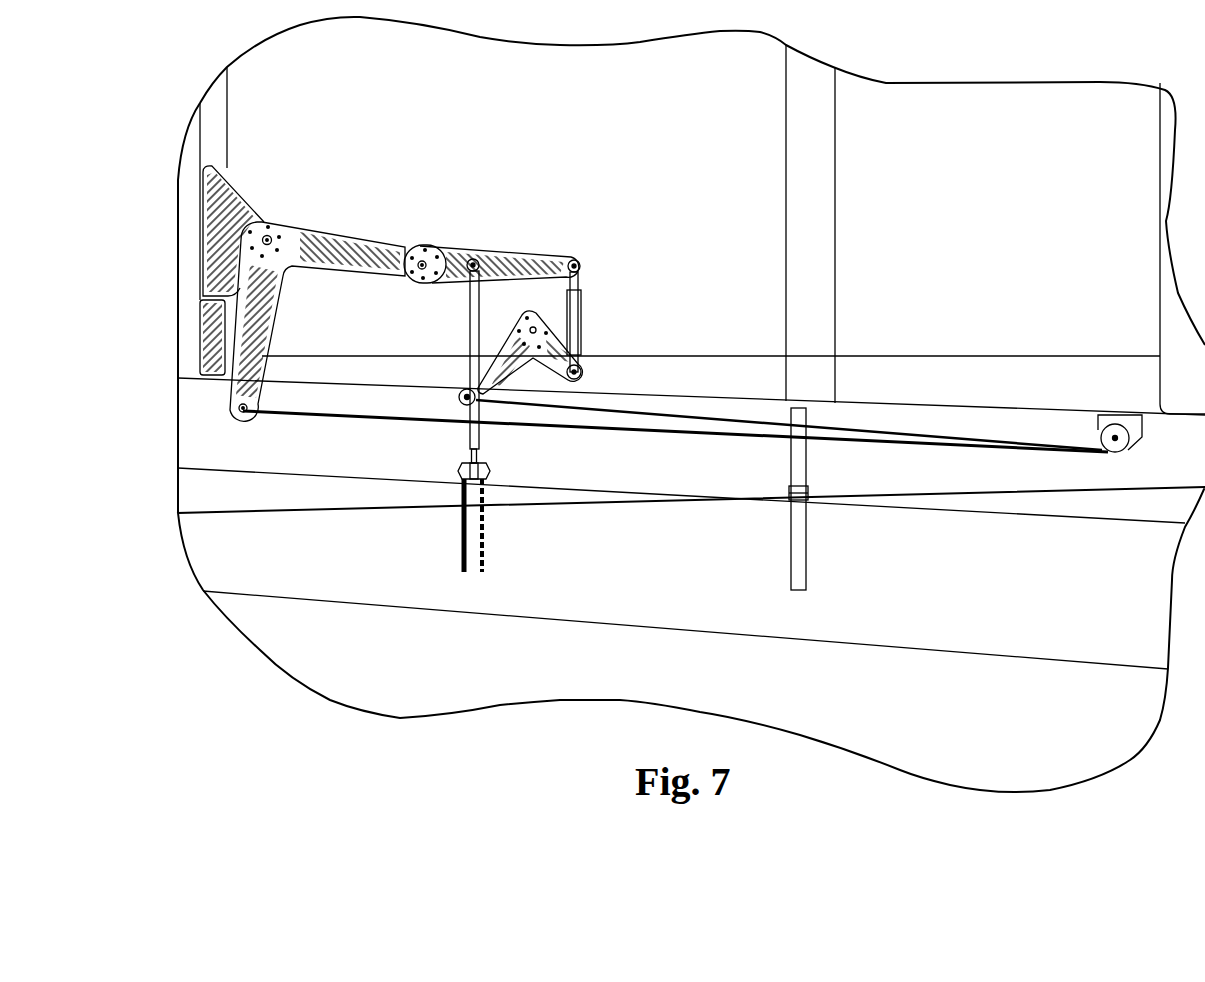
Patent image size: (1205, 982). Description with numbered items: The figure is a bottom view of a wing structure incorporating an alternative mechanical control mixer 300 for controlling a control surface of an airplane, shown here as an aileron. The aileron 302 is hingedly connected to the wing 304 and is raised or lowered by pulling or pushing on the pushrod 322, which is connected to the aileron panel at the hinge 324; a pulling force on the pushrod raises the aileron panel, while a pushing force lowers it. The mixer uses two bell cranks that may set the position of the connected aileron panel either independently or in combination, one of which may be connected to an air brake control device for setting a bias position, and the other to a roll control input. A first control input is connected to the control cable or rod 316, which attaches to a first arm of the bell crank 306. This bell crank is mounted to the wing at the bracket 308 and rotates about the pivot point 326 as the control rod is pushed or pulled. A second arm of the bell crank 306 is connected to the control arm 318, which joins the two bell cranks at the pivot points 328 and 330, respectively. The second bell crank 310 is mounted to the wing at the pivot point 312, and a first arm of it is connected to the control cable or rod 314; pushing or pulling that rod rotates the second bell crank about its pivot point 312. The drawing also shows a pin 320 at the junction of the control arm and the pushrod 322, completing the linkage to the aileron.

The mechanical control mixer 300 is at (184, 630).
The aileron 302 is at (370, 598).
The wing 304 is at (397, 142).
The bell crank 306 is at (342, 241).
The bracket 308 is at (237, 200).
The bell crank 310 is at (578, 331).
The pivot point 312 is at (533, 327).
The control cable or rod 314 is at (674, 420).
The control cable or rod 316 is at (303, 417).
The control arm 318 is at (527, 257).
The pivot pin 320 is at (476, 259).
The pushrod 322 is at (468, 327).
The hinge 324 is at (490, 471).
The pivot point 326 is at (271, 234).
The pivot point 328 is at (426, 262).
The pivot point 330 is at (580, 260).